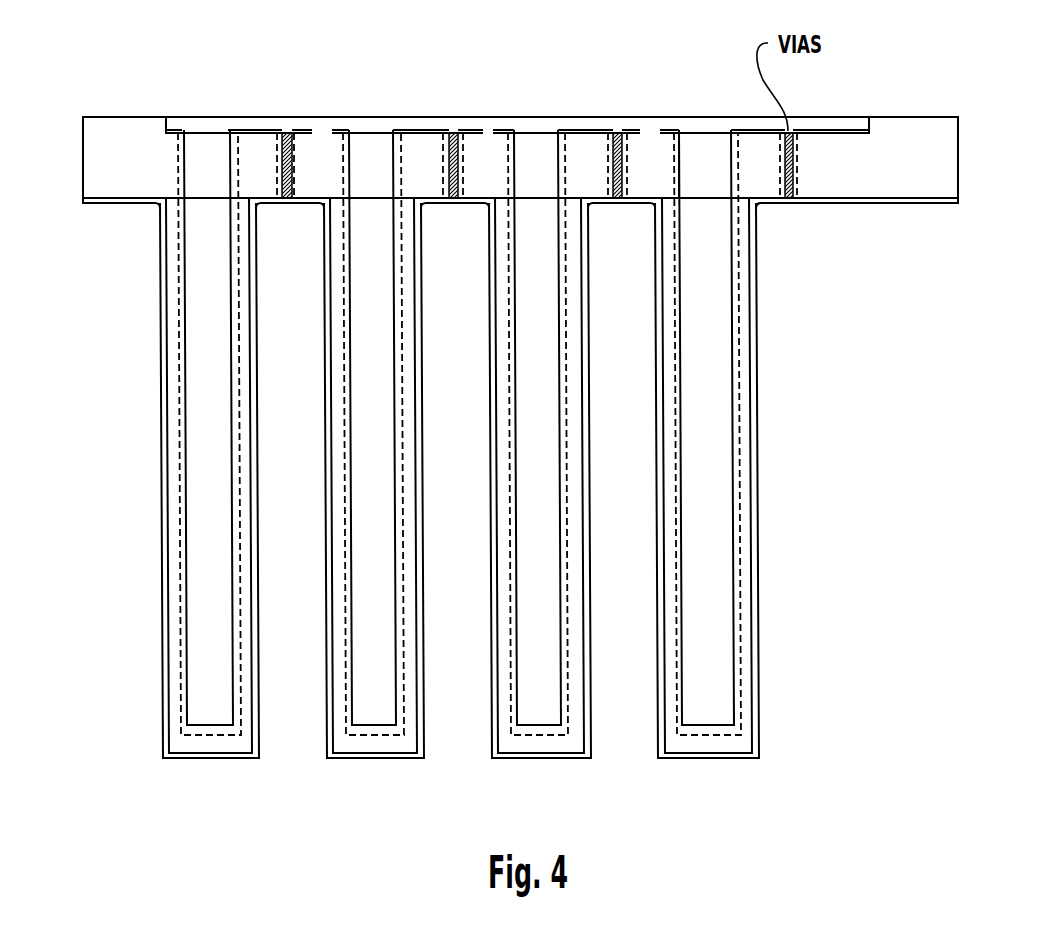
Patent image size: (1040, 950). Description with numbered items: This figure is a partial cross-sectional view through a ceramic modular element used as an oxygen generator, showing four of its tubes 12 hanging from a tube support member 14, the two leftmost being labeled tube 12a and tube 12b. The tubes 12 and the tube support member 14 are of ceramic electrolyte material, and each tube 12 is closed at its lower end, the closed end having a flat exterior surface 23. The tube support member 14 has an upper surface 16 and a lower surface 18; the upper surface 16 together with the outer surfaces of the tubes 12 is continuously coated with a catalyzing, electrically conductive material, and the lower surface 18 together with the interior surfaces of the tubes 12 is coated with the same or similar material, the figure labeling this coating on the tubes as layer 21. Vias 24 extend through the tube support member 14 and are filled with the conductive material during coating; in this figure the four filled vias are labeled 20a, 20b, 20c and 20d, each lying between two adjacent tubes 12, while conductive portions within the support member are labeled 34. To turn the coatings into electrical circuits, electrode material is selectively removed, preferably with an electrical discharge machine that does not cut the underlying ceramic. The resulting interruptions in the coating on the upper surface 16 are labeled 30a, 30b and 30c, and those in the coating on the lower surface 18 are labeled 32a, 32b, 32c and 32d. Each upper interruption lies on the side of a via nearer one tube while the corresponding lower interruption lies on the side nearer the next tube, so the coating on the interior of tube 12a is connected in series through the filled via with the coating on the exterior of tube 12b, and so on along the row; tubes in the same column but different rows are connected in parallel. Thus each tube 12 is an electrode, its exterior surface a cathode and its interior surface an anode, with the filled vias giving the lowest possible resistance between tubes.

The tube 12 is at (750, 333).
The tube 12a is at (213, 747).
The tube 12b is at (388, 748).
The tube support member 14 is at (950, 168).
The upper surface 16 is at (947, 205).
The lower surface 18 is at (950, 110).
The via 20a is at (287, 132).
The via 20b is at (453, 132).
The via 20c is at (618, 132).
The via 20d is at (793, 132).
The outer conductive coating 21 is at (303, 204).
The flat exterior surface 23 is at (679, 142).
The via 24 is at (868, 117).
The opening in top layer 30a is at (323, 122).
The opening in top layer 30b is at (489, 122).
The opening in top layer 30c is at (650, 120).
The coating bridge between tines 32a is at (268, 216).
The coating bridge between tines 32b is at (436, 216).
The coating bridge between tines 32c is at (608, 216).
The coating bridge 32d is at (775, 216).
The conductive pad / trace 34 is at (237, 130).